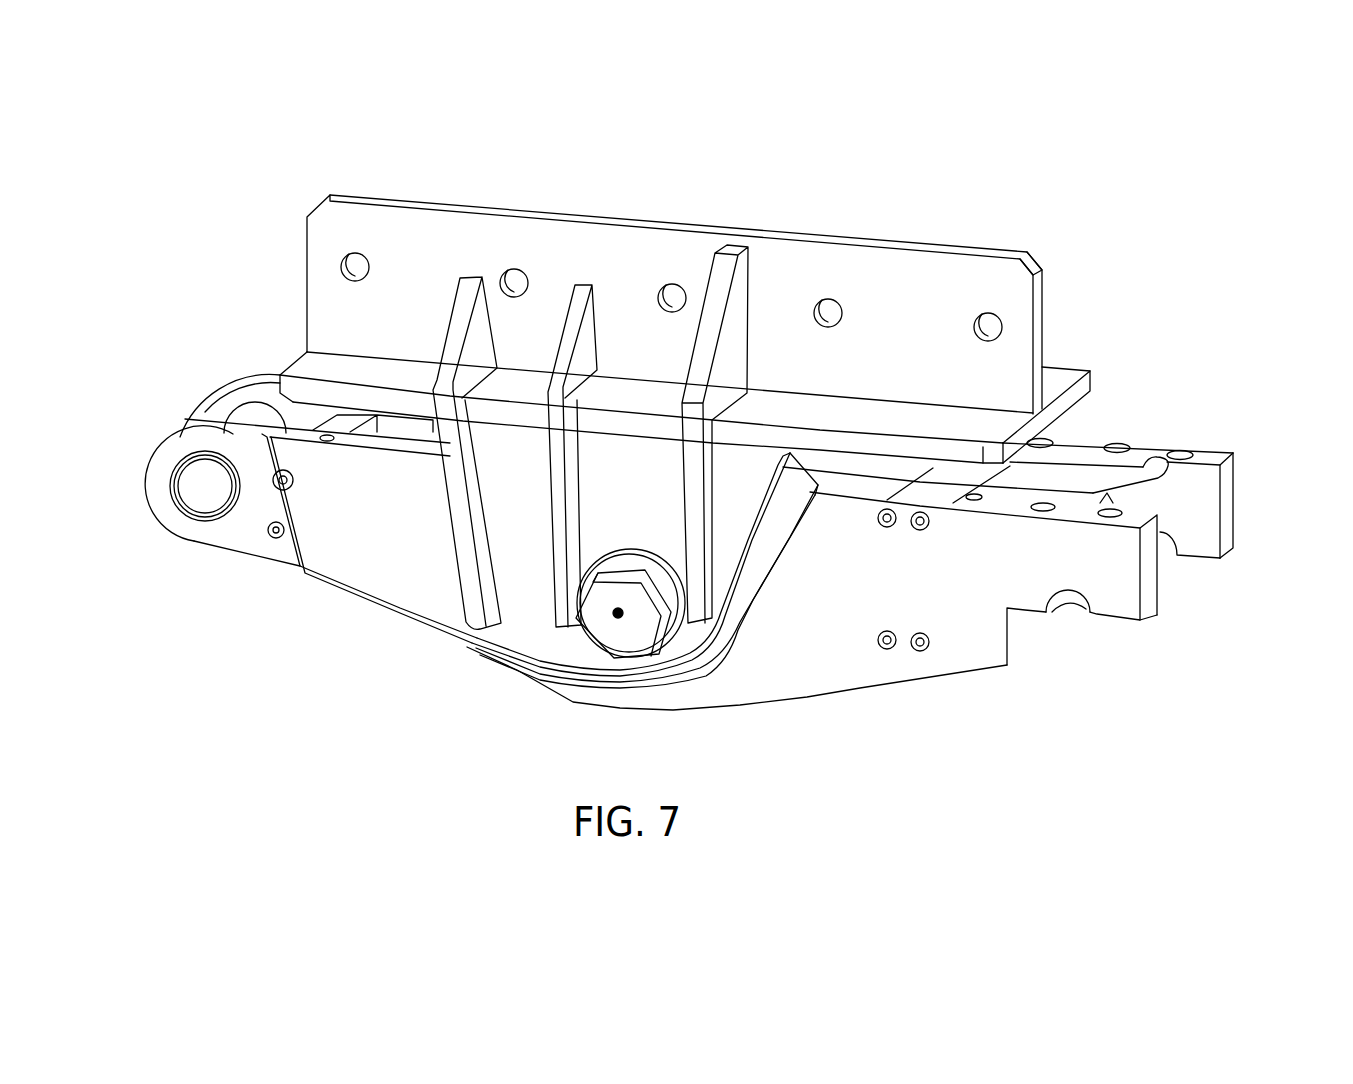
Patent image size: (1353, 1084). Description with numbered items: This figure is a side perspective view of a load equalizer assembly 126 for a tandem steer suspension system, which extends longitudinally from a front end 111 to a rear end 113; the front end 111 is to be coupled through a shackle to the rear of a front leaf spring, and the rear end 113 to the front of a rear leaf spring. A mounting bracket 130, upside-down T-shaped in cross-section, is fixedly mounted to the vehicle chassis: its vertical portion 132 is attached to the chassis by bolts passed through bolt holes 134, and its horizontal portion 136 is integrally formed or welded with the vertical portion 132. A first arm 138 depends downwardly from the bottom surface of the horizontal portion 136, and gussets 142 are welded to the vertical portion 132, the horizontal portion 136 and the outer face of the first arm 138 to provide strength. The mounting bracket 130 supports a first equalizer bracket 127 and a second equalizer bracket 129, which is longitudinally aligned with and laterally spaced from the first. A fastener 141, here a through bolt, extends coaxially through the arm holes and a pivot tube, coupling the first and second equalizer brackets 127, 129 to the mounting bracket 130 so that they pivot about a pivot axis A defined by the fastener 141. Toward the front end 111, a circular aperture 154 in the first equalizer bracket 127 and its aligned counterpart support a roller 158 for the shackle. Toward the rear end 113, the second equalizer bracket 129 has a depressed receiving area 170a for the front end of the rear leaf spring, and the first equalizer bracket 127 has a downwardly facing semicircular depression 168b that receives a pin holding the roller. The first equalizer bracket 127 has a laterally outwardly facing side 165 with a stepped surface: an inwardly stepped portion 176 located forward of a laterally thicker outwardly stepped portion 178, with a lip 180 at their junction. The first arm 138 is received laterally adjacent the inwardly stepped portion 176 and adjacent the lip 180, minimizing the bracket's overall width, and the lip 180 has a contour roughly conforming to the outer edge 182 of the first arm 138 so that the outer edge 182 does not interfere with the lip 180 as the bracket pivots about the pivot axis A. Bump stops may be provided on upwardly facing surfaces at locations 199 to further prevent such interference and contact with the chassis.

The front end 111 is at (122, 477).
The rear end 113 is at (1198, 648).
The load equalizer assembly 126 is at (1232, 407).
The first equalizer bracket 127 is at (980, 684).
The second equalizer bracket 129 is at (1246, 494).
The mounting bracket 130 is at (830, 231).
The vertical portion 132 is at (928, 282).
The bolt holes 134 is at (513, 262).
The horizontal portion 136 is at (897, 420).
The first arm 138 is at (637, 505).
The fastener 141 is at (597, 630).
The gussets 142 is at (455, 322).
The circular aperture 154 is at (207, 523).
The roller 158 is at (197, 483).
The laterally outwardly facing side 165 is at (762, 678).
The downwardly facing semicircular depression 168b is at (1090, 607).
The depressed receiving area 170a is at (1196, 529).
The inwardly stepped portion 176 is at (410, 578).
The outwardly stepped portion 178 is at (822, 672).
The lip 180 is at (760, 572).
The outer edge 182 is at (752, 543).
The locations 199 is at (338, 447).
The pivot axis A is at (618, 618).